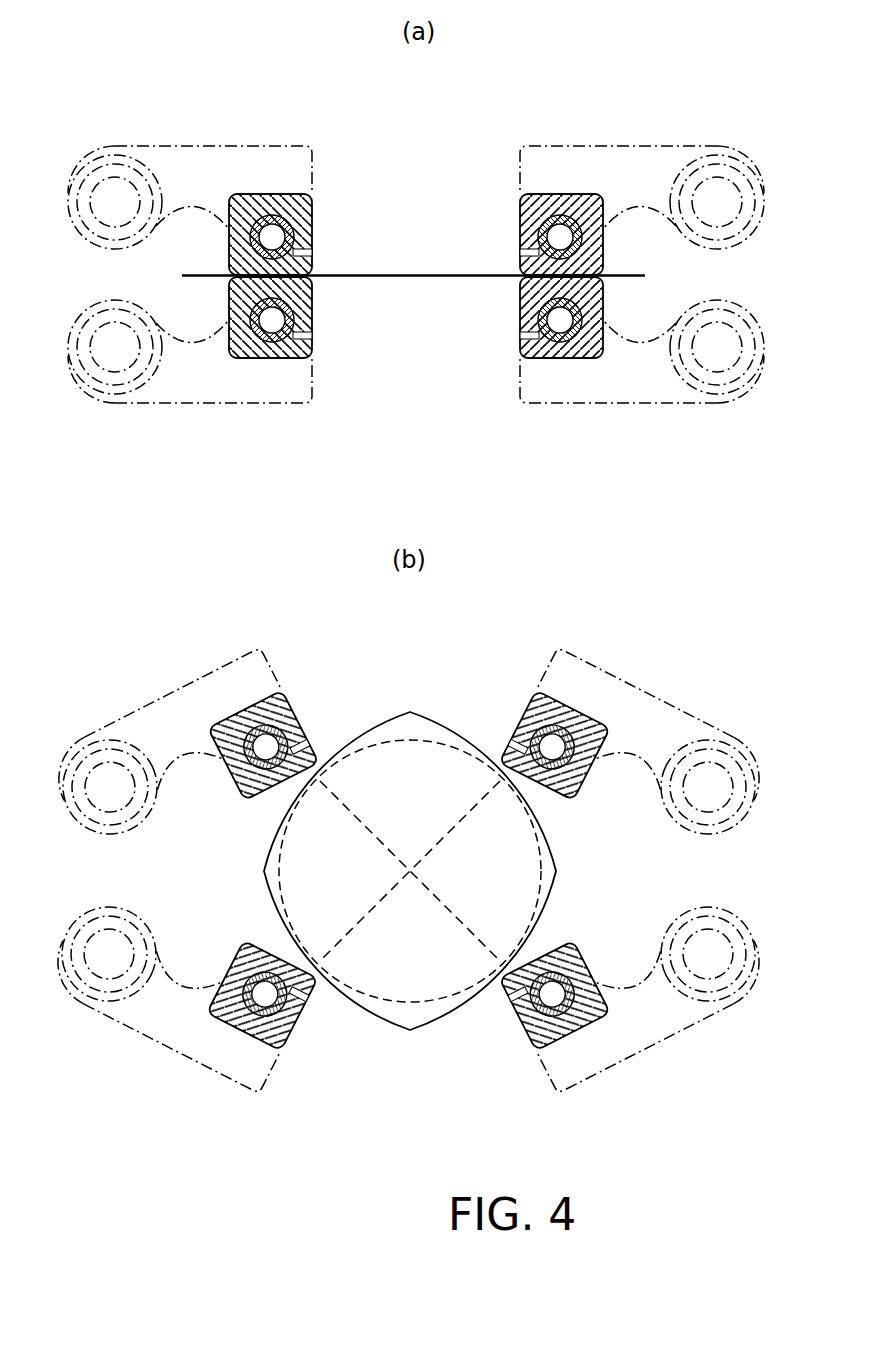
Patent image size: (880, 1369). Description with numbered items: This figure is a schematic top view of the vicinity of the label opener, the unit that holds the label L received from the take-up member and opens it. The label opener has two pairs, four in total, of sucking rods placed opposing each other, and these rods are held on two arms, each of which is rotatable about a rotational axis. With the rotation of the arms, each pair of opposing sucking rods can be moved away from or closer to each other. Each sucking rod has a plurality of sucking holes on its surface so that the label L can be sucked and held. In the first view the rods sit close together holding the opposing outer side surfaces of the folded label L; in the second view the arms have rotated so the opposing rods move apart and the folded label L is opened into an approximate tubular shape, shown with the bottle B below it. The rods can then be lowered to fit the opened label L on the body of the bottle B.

The label L is at (409, 711).
The bottle B is at (411, 1031).